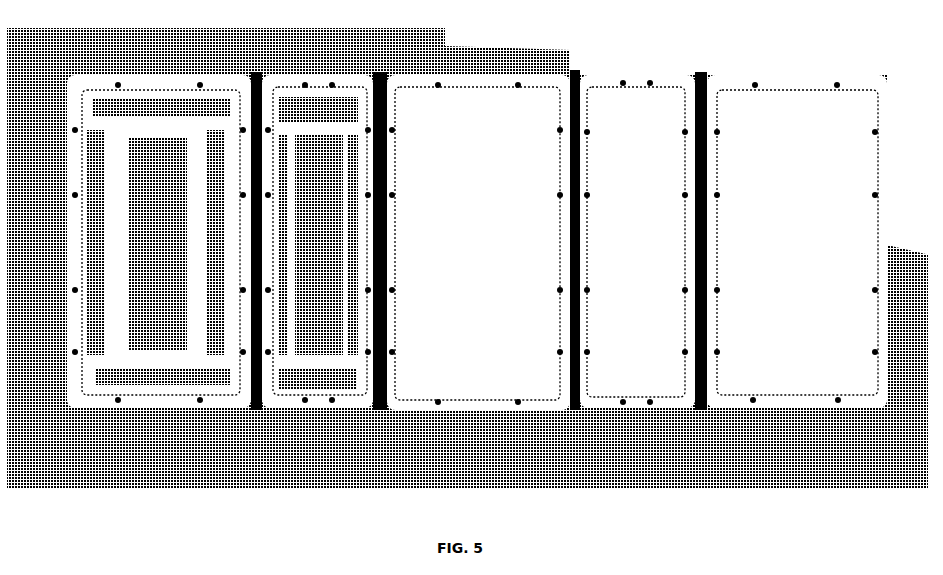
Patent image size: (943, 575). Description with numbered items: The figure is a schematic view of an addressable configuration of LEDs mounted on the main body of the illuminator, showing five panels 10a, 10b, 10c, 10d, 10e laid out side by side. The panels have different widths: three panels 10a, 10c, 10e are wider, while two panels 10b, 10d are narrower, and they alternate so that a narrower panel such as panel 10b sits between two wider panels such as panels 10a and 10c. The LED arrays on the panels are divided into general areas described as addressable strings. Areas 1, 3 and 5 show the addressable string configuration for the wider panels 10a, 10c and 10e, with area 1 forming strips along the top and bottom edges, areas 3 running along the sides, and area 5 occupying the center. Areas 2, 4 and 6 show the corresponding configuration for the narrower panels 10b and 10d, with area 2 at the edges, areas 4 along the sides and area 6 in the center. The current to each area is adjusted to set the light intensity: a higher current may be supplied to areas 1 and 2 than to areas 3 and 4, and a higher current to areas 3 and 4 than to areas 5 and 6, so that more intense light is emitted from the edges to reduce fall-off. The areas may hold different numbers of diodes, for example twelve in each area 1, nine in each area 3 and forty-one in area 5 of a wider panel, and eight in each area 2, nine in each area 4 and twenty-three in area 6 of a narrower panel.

The area 1 is at (161, 242).
The area 2 is at (318, 243).
The area 3 is at (156, 242).
The area 4 is at (282, 142).
The area 5 is at (157, 244).
The area 6 is at (318, 245).
The panel 10a is at (159, 270).
The panel 10b is at (317, 270).
The panel 10c is at (487, 382).
The panel 10d is at (647, 382).
The panel 10e is at (805, 382).